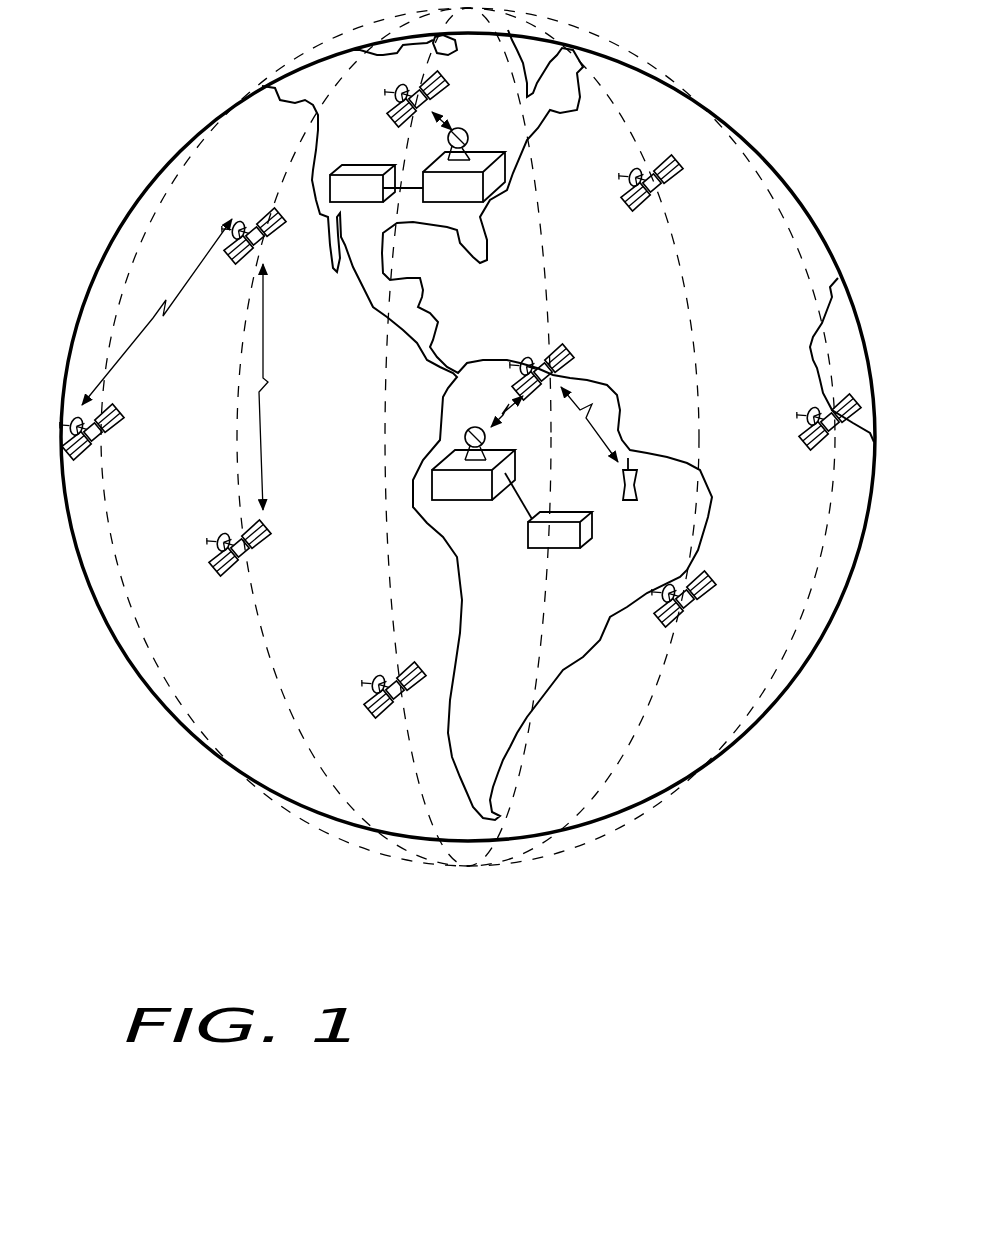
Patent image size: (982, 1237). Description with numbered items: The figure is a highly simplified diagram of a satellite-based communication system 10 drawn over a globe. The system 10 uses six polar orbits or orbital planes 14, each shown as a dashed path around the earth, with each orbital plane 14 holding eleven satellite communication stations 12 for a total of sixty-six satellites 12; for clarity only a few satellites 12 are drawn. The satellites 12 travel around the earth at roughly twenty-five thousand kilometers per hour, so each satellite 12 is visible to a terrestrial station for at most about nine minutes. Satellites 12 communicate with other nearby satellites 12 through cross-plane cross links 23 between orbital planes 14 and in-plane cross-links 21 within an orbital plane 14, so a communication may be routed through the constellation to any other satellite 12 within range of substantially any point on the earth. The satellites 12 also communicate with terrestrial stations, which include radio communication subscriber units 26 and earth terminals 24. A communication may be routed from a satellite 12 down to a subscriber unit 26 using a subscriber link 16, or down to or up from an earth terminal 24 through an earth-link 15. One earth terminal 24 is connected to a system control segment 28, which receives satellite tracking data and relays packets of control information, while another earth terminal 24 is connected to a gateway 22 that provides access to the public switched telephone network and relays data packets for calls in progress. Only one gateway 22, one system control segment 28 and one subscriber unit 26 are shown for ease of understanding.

The satellite-based communication system 10 is at (462, 962).
The satellite communication station 12 is at (444, 86).
The orbital plane 14 is at (289, 156).
The earth-link 15 is at (503, 408).
The subscriber link 16 is at (595, 390).
The in-plane cross-link 21 is at (268, 381).
The gateway 22 is at (563, 548).
The cross-plane cross link 23 is at (170, 302).
The earth terminal 24 is at (491, 150).
The radio communication subscriber unit 26 is at (634, 500).
The system control segment 28 is at (371, 168).